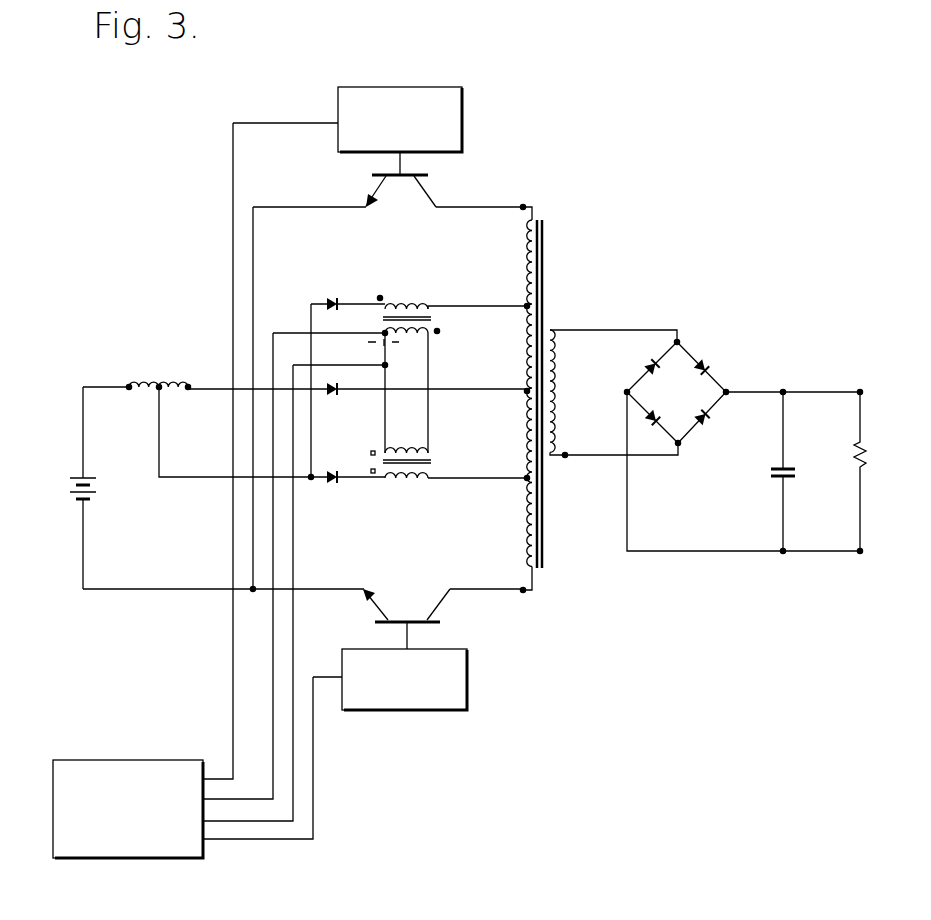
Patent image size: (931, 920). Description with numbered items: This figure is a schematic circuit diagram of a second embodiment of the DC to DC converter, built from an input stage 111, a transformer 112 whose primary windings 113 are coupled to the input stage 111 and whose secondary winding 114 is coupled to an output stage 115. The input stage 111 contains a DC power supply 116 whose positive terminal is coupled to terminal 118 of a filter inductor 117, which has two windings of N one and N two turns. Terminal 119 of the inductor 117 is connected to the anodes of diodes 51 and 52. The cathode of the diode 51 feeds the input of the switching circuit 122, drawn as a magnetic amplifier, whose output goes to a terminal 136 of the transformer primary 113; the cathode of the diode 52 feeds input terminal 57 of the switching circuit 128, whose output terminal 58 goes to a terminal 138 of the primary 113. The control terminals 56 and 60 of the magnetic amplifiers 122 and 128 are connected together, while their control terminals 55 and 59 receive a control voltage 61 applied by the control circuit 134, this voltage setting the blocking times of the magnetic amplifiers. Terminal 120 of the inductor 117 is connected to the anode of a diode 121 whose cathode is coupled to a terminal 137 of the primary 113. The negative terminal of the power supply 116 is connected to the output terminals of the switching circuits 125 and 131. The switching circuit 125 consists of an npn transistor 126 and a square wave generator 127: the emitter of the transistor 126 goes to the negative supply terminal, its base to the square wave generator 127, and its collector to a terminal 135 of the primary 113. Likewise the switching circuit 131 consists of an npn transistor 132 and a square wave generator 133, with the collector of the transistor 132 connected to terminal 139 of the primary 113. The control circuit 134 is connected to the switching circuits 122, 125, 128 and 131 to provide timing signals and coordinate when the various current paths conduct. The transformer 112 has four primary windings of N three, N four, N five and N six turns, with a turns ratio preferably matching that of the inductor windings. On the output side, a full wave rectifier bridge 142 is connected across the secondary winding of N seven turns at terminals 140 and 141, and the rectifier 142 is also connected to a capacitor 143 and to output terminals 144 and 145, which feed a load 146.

The diode 51 is at (330, 298).
The diode 52 is at (331, 489).
The control terminal 55 is at (381, 336).
The control terminal 56 is at (439, 334).
The input terminal 57 is at (392, 492).
The output terminal 58 is at (432, 482).
The control terminal 59 is at (385, 447).
The control terminal 60 is at (430, 450).
The control voltage 61 is at (390, 356).
The input stage 111 is at (146, 256).
The transformer 112 is at (557, 409).
The primary windings 113 is at (523, 244).
The secondary winding 114 is at (554, 392).
The output stage 115 is at (769, 468).
The DC power supply 116 is at (68, 496).
The filter inductor 117 is at (205, 405).
The terminal 118 is at (128, 384).
The terminal 119 is at (155, 398).
The terminal 120 is at (192, 392).
The diode 121 is at (331, 402).
The switching circuit 122 is at (400, 314).
The switching circuit 125 is at (425, 178).
The npn transistor 126 is at (372, 176).
The square wave generator 127 is at (455, 95).
The switching circuit 128 is at (438, 483).
The switching circuit 131 is at (431, 622).
The npn transistor 132 is at (378, 623).
The square wave generator 133 is at (460, 705).
The control circuit 134 is at (60, 852).
The terminal 135 is at (526, 209).
The terminal 136 is at (524, 304).
The terminal 137 is at (524, 390).
The terminal 138 is at (524, 477).
The terminal 139 is at (525, 594).
The terminal 140 is at (558, 330).
The terminal 141 is at (558, 458).
The full wave rectifier bridge 142 is at (697, 406).
The capacitor 143 is at (777, 484).
The output terminal 144 is at (862, 390).
The output terminal 145 is at (858, 555).
The load 146 is at (863, 456).